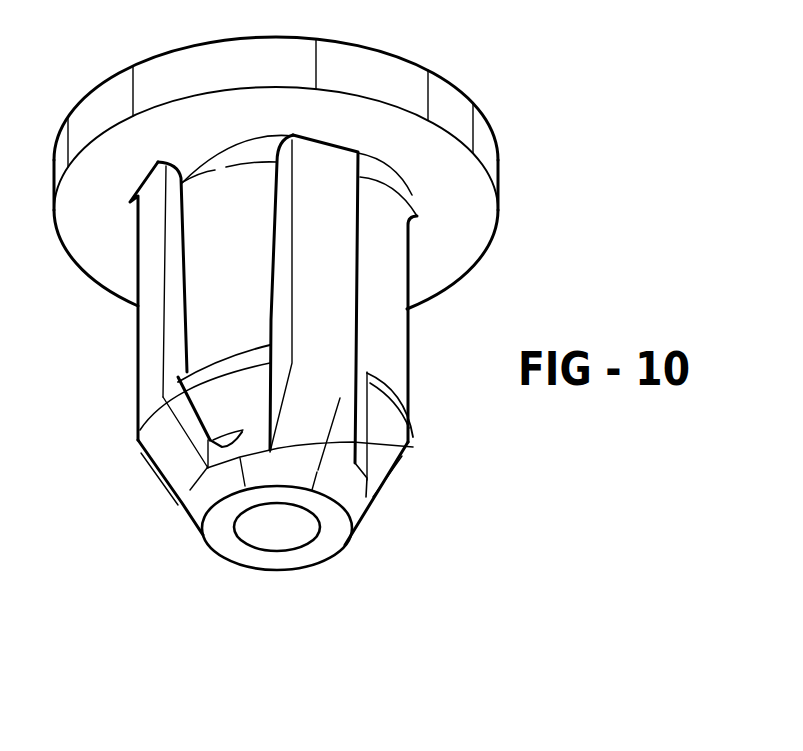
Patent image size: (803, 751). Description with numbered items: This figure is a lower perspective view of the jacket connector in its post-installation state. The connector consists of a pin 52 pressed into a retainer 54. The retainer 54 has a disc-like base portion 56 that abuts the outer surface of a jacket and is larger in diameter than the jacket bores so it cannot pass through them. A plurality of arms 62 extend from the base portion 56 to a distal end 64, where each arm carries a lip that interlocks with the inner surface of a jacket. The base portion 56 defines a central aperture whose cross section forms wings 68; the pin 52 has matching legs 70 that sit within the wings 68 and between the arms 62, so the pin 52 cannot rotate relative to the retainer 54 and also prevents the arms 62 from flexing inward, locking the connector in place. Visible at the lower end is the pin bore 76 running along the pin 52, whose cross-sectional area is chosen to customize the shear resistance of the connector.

The pin 52 is at (217, 538).
The retainer 54 is at (442, 90).
The base portion 56 is at (473, 208).
The arms 62 is at (207, 278).
The distal end 64 is at (178, 497).
The wings 68 is at (333, 237).
The legs 70 is at (410, 448).
The pin bore 76 is at (272, 551).